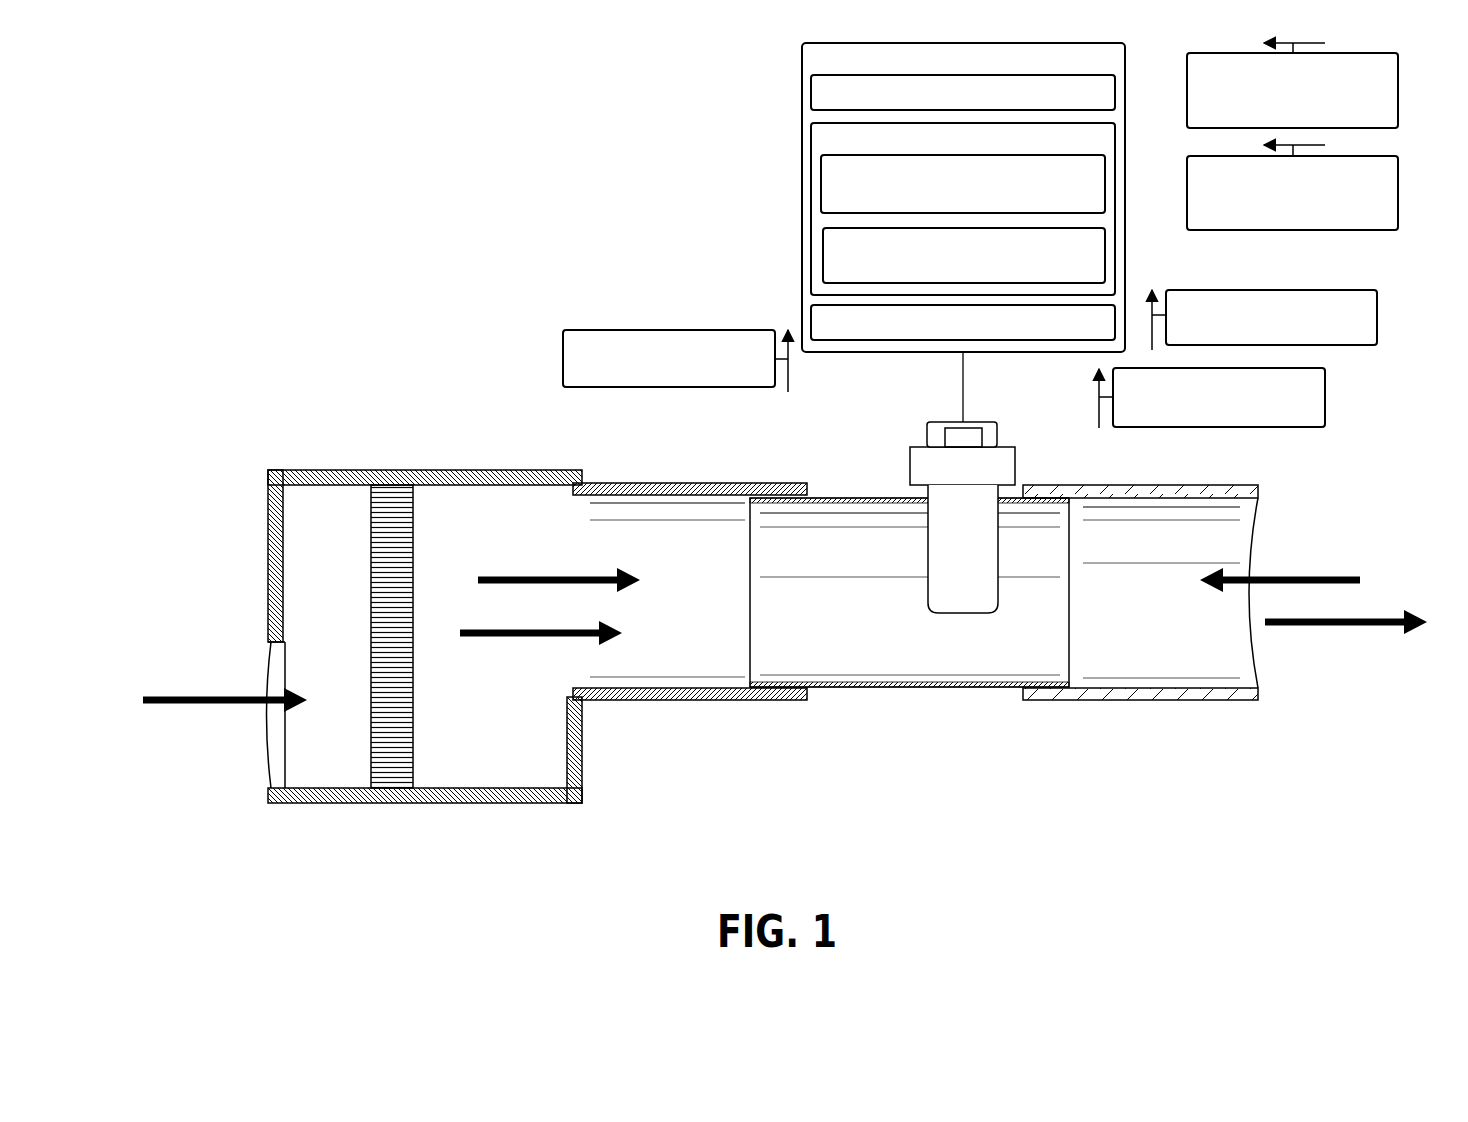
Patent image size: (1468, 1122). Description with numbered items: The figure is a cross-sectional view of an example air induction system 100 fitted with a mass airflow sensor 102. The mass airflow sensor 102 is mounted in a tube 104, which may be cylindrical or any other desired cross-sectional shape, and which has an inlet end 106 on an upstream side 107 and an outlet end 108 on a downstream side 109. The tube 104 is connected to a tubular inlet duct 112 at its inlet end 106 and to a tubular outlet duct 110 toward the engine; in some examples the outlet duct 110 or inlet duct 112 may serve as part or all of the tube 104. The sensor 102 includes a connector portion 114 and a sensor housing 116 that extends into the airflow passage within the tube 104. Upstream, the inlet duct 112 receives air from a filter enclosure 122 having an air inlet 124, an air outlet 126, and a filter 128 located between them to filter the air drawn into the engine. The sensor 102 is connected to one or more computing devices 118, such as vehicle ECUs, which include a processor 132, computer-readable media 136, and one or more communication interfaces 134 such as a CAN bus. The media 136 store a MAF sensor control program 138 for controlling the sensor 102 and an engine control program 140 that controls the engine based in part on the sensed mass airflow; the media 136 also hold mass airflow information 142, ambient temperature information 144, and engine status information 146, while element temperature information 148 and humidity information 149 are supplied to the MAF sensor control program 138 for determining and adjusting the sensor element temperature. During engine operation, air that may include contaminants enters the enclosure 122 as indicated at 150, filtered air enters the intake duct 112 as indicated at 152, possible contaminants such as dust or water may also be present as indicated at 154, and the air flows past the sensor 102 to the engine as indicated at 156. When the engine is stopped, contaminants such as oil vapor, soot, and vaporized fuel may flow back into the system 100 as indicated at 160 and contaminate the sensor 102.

The air induction system 100 is at (170, 60).
The mass airflow sensor 102 is at (907, 436).
The tube 104 is at (860, 689).
The inlet end 106 is at (740, 538).
The upstream side 107 is at (626, 517).
The outlet end 108 is at (1090, 534).
The downstream side 109 is at (1174, 534).
The tubular outlet duct 110 is at (1183, 700).
The tubular inlet duct 112 is at (733, 700).
The connector portion 114 is at (998, 425).
The sensor housing 116 is at (928, 556).
The computing device(s) 118 is at (963, 232).
The filter enclosure 122 is at (268, 470).
The air inlet 124 is at (262, 775).
The air outlet 126 is at (585, 652).
The filter 128 is at (413, 757).
The processor 132 is at (963, 92).
The communication interface(s) 134 is at (963, 322).
The computer-readable media 136 is at (963, 209).
The MAF sensor control program 138 is at (963, 184).
The engine control program 140 is at (964, 255).
The mass airflow information 142 is at (1212, 398).
The ambient temperature information 144 is at (1292, 187).
The engine status information 146 is at (1292, 85).
The element temperature information 148 is at (1264, 320).
The humidity information 149 is at (675, 361).
The air with contaminants entering 150 is at (158, 680).
The filtered air 152 is at (460, 532).
The possible contaminants 154 is at (558, 656).
The airflow to engine 156 is at (1345, 668).
The contaminants from engine when stopped 160 is at (1305, 509).